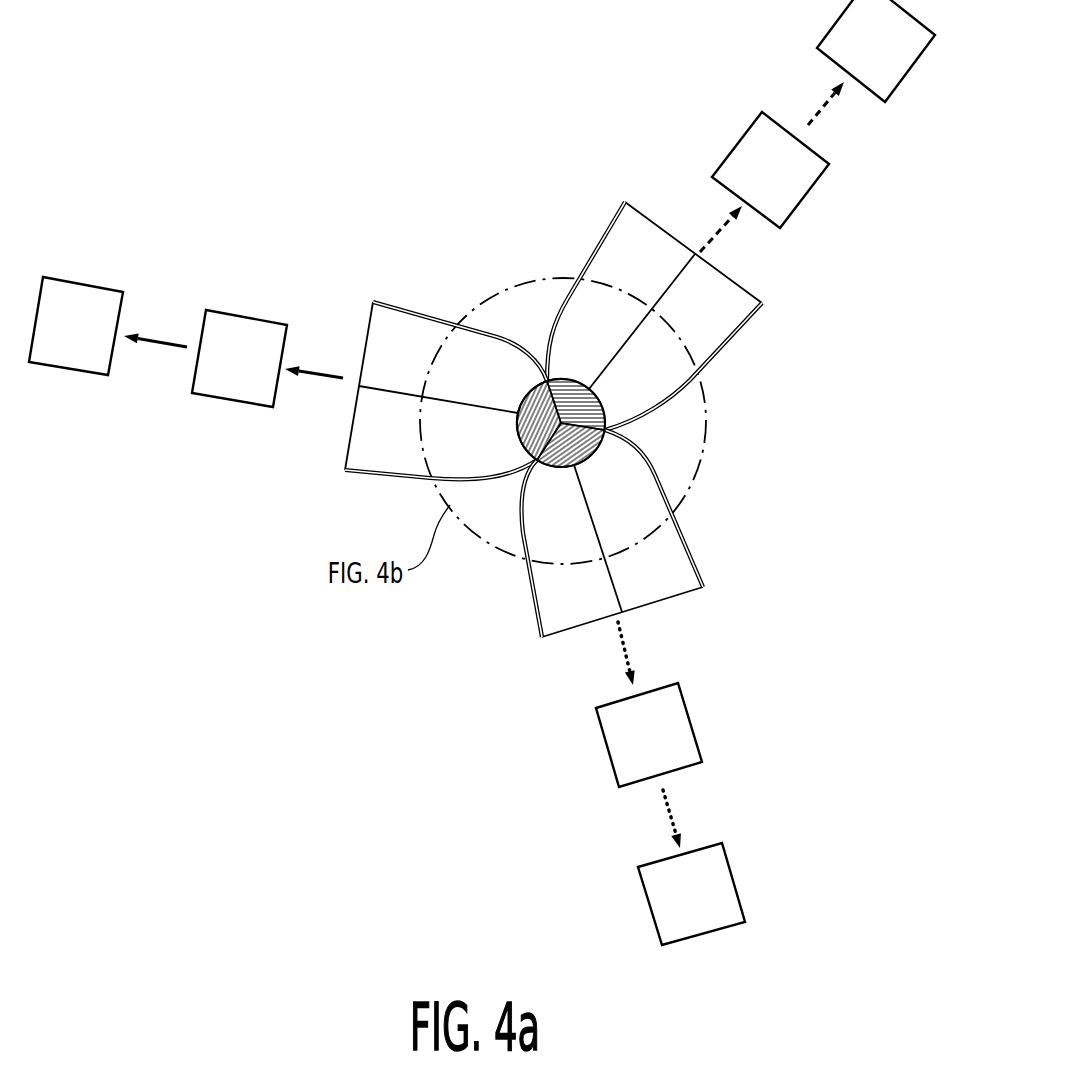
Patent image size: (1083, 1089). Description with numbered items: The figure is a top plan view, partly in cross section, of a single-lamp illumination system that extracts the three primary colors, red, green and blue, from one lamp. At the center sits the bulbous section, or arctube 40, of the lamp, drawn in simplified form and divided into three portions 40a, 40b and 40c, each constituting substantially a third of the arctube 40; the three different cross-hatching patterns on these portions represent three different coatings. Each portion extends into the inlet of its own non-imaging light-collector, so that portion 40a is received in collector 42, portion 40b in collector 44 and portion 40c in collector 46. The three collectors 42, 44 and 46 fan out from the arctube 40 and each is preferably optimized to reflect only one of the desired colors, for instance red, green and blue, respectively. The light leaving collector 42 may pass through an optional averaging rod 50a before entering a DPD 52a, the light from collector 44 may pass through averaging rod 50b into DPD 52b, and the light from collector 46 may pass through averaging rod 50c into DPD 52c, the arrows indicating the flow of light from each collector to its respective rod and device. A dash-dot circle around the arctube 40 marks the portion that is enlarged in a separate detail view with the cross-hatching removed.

The arctube 40 is at (619, 448).
The first portion of arctube 40a is at (608, 404).
The second portion of arctube 40b is at (532, 386).
The third portion of arctube 40c is at (555, 467).
The non-imaging light-collector 42 is at (743, 337).
The non-imaging light-collector 44 is at (382, 477).
The non-imaging light-collector 46 is at (693, 558).
The averaging rod 50a is at (752, 184).
The averaging rod 50b is at (219, 380).
The averaging rod 50c is at (628, 750).
The DPD 52a is at (857, 54).
The DPD 52b is at (57, 345).
The DPD 52c is at (677, 908).